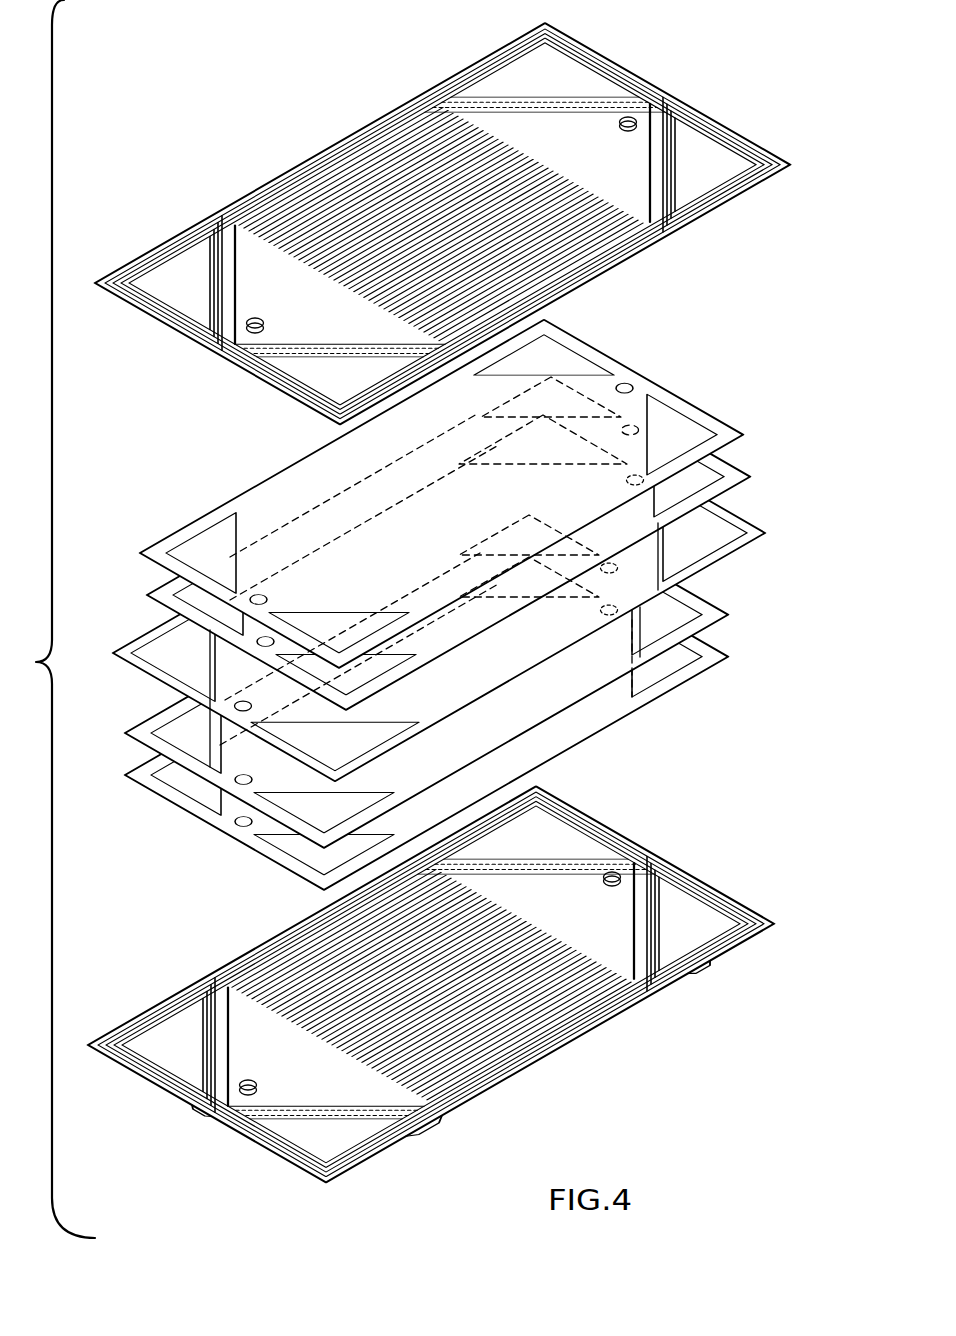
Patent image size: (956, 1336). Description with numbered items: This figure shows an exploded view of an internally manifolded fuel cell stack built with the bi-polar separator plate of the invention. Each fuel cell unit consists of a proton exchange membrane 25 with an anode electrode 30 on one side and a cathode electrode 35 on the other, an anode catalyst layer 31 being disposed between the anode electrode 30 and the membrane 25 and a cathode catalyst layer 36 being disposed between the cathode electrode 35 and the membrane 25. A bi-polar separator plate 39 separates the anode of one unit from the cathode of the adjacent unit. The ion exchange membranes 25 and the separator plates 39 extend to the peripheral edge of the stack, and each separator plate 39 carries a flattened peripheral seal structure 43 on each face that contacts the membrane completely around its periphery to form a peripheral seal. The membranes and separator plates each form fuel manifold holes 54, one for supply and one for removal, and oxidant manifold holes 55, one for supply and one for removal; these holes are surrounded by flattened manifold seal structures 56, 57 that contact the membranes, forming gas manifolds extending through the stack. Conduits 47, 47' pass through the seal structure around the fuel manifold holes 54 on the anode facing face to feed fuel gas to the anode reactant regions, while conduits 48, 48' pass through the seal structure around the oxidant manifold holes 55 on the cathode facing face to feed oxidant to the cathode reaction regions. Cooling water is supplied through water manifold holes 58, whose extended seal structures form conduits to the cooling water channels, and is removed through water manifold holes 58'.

The proton exchange membrane 25 is at (735, 523).
The anode electrode 30 is at (652, 378).
The anode catalyst layer 31 is at (730, 468).
The cathode electrode 35 is at (692, 682).
The cathode catalyst layer 36 is at (714, 613).
The bi-polar separator plate 39 is at (678, 233).
The flattened peripheral seal structure 43 is at (720, 128).
The conduit 47 is at (193, 1118).
The conduit 47' is at (723, 1005).
The conduit 48 is at (413, 1137).
The conduit 48' is at (536, 869).
The fuel manifold hole 54 is at (705, 168).
The oxidant manifold hole 55 is at (568, 90).
The flattened manifold seal structure 56 is at (740, 150).
The flattened manifold seal structure 57 is at (500, 82).
The water manifold hole 58 is at (253, 328).
The water manifold hole 58' is at (661, 497).